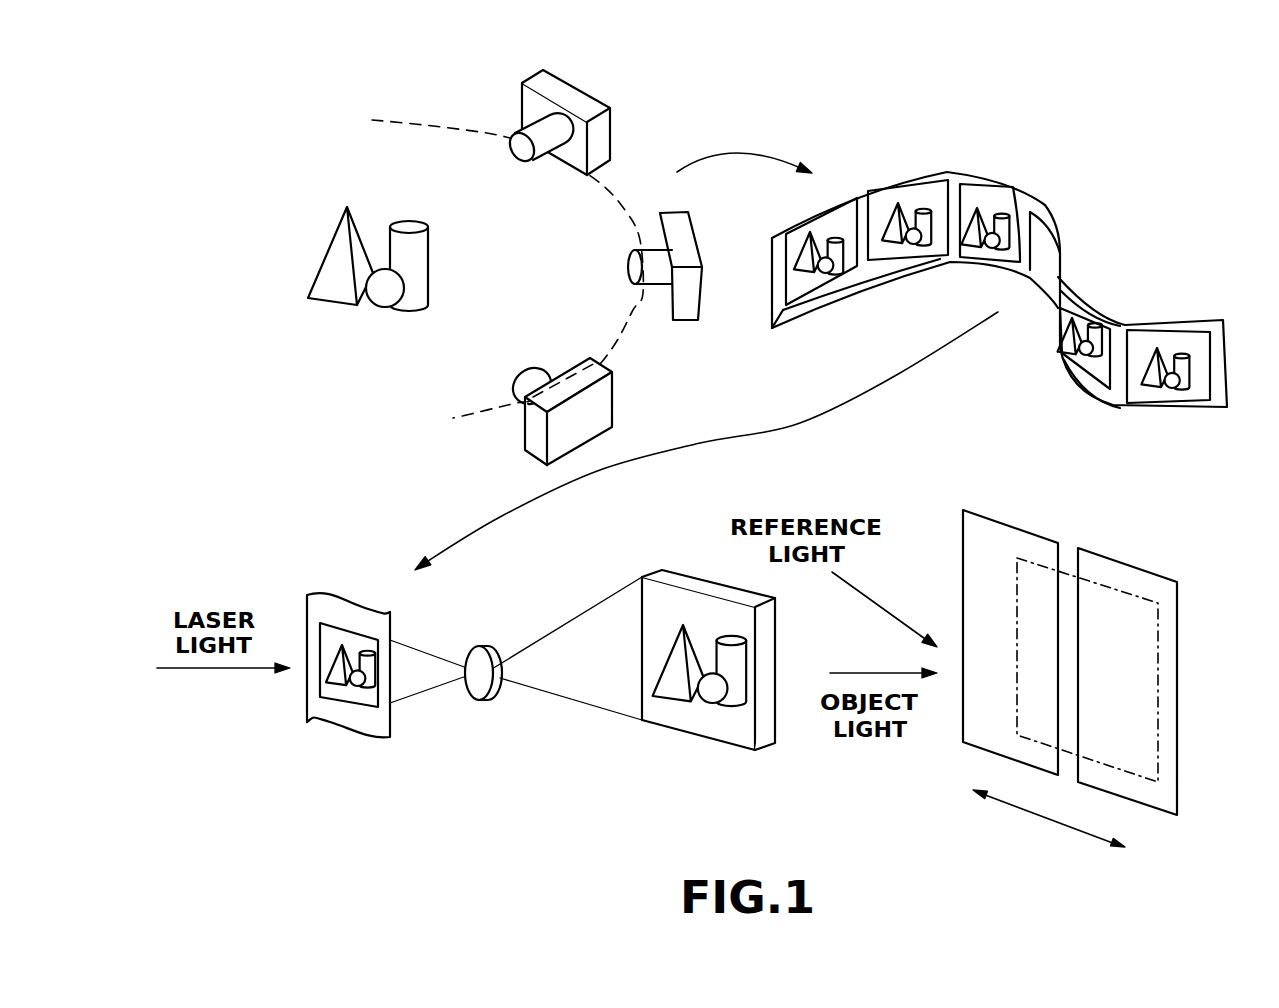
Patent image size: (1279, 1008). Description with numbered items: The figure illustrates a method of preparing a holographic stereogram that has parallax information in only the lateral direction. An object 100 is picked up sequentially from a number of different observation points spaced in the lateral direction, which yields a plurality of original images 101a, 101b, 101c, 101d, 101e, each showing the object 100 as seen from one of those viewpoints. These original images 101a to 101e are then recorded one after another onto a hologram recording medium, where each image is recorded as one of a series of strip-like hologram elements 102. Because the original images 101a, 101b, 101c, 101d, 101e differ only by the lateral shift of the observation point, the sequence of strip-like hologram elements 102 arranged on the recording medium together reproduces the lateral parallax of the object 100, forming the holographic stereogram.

The object 100 is at (300, 240).
The original image 101a is at (833, 213).
The original image 101b is at (915, 197).
The original image 101c is at (980, 197).
The original image 101d is at (1080, 307).
The original image 101e is at (1190, 340).
The strip-like hologram elements 102 is at (1035, 562).